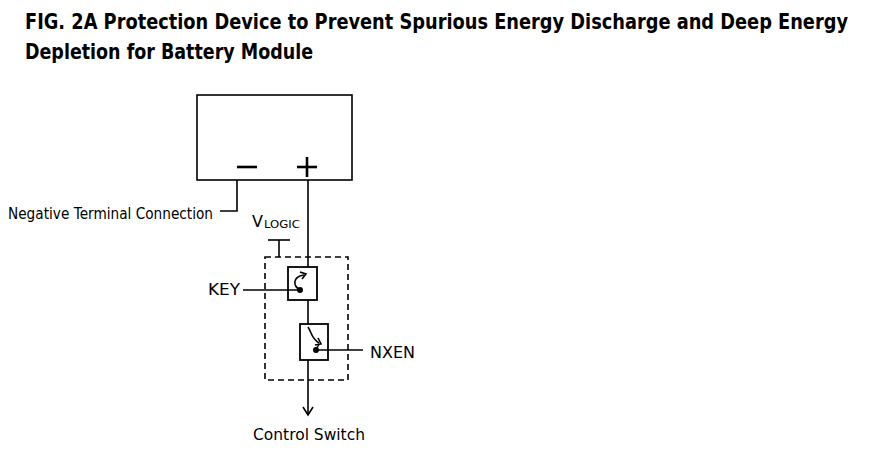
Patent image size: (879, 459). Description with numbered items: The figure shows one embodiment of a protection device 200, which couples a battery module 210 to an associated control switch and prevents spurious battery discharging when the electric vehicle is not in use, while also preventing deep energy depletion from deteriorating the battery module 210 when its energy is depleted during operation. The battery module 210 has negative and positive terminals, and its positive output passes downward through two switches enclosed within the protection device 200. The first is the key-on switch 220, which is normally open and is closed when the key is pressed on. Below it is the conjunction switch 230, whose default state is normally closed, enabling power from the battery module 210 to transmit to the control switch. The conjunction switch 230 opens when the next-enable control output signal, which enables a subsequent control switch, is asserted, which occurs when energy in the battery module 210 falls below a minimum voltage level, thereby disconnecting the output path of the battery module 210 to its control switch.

The battery module 210 is at (274, 137).
The protection device 200 is at (371, 248).
The key-on switch 220 is at (322, 290).
The conjunction switch 230 is at (292, 345).